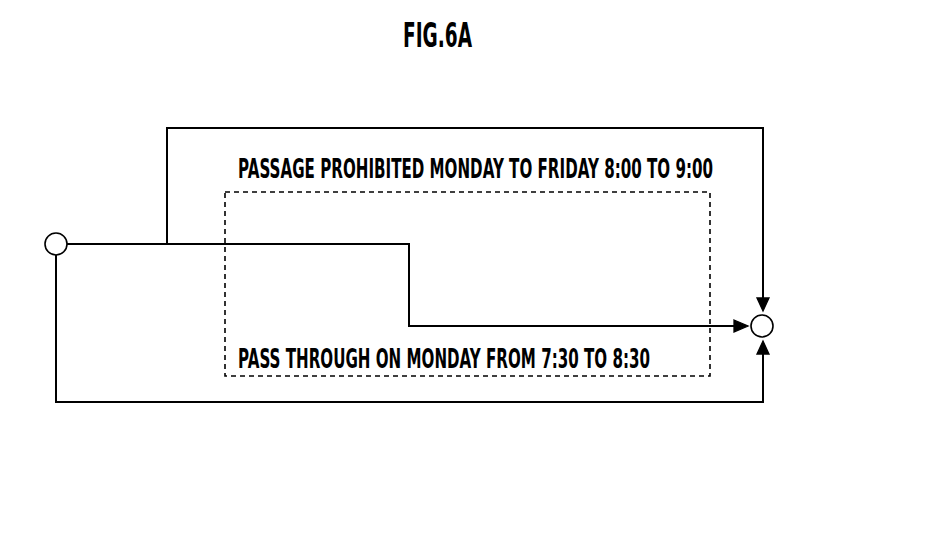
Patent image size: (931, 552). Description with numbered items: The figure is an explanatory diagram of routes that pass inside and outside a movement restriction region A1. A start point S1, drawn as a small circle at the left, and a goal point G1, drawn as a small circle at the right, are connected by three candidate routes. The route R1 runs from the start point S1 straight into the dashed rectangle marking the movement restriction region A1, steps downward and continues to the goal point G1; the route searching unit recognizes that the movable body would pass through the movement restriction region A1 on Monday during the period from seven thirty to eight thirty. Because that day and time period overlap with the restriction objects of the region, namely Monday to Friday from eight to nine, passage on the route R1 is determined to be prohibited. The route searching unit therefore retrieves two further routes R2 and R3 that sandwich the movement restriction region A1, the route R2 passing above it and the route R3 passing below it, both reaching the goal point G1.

The start point S1 is at (59, 233).
The goal point G1 is at (774, 330).
The route R1 is at (497, 324).
The route R2 is at (497, 128).
The route R3 is at (493, 403).
The movement restriction region A1 is at (712, 250).